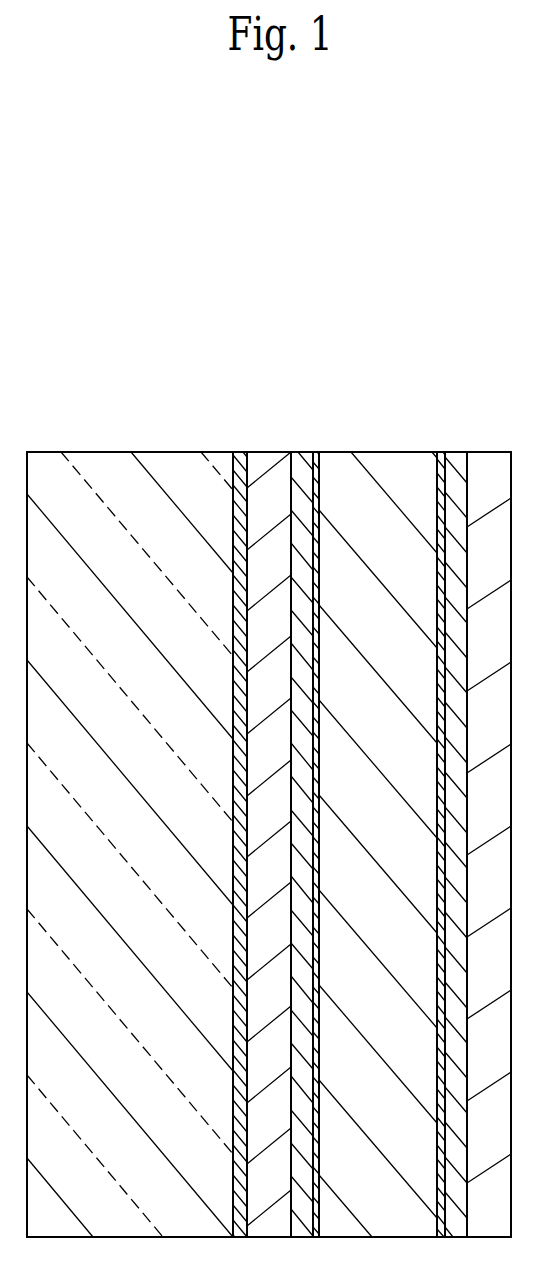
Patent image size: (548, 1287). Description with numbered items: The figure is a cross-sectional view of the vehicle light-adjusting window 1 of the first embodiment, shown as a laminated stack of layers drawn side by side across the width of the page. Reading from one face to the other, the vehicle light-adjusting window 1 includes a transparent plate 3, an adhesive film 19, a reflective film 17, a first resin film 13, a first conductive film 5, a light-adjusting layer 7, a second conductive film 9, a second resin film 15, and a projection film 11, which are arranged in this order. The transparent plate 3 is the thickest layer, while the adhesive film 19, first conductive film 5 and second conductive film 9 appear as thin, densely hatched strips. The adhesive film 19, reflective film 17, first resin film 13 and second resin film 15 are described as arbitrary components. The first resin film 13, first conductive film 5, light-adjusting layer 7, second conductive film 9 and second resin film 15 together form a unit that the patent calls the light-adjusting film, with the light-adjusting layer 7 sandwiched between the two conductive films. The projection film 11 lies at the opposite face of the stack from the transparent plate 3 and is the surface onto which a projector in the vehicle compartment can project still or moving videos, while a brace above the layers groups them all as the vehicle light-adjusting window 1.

The vehicle light-adjusting window 1 is at (103, 342).
The transparent plate 3 is at (133, 452).
The adhesive film 19 is at (240, 452).
The reflective film 17 is at (270, 452).
The first resin film 13 is at (303, 452).
The first conductive film 5 is at (315, 452).
The light-adjusting layer 7 is at (378, 457).
The second conductive film 9 is at (440, 452).
The second resin film 15 is at (455, 455).
The projection film 11 is at (492, 457).